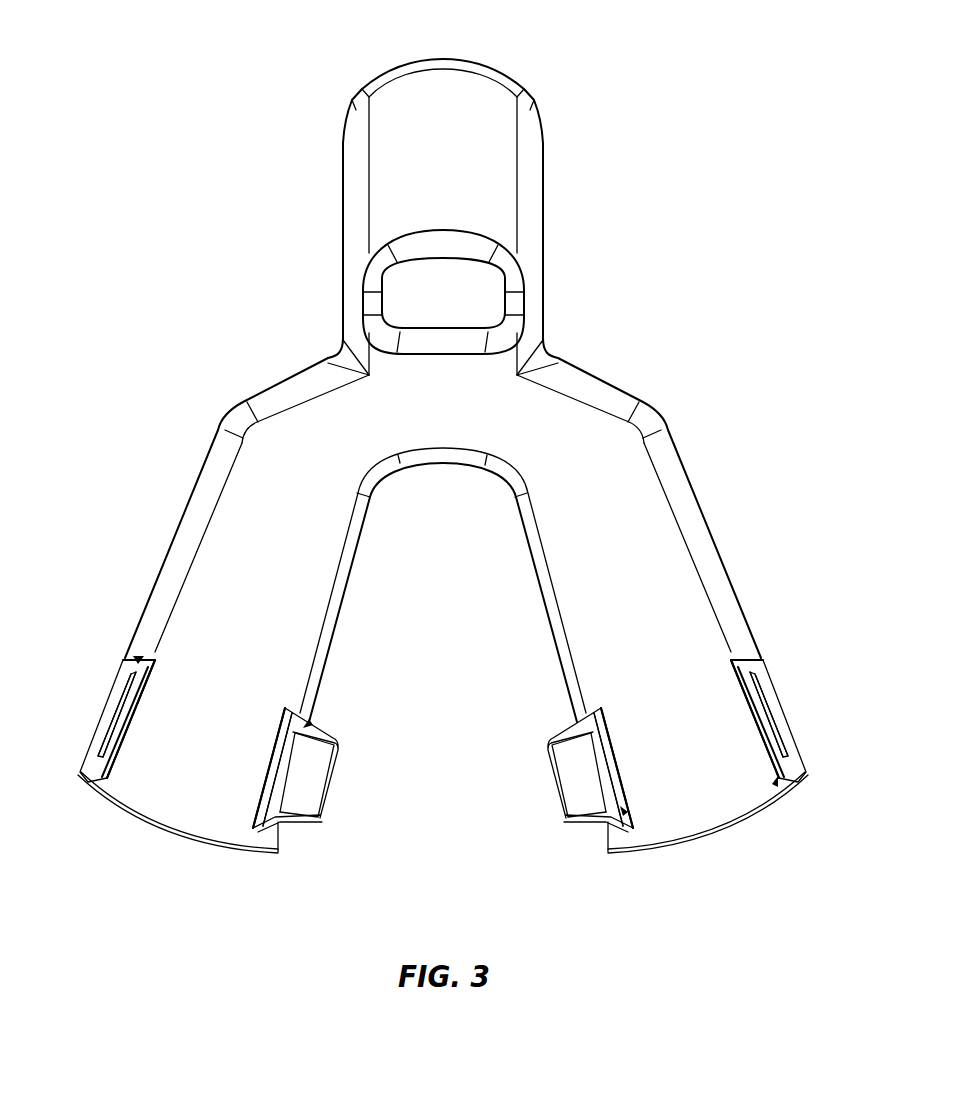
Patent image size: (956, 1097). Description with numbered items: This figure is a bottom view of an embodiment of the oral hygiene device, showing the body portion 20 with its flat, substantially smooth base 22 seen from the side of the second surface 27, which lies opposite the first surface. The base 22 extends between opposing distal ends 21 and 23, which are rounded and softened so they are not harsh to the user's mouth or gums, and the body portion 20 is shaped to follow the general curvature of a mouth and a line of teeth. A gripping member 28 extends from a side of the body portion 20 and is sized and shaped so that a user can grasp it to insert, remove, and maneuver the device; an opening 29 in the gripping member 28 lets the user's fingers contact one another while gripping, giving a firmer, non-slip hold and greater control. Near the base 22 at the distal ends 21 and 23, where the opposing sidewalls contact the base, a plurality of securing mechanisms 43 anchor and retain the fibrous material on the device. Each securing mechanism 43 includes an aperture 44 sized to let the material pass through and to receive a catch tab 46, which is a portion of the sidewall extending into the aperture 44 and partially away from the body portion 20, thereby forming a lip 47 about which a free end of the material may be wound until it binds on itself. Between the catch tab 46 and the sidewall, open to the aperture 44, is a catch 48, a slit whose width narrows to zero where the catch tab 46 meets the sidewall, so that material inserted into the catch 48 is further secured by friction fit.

The body portion 20 is at (435, 460).
The distal end 21 is at (722, 840).
The base 22 is at (673, 613).
The distal end 23 is at (165, 840).
The second surface 27 is at (276, 550).
The gripping member 28 is at (437, 82).
The opening 29 is at (455, 291).
The securing mechanism 43 is at (86, 722).
The aperture 44 is at (138, 660).
The catch tab 46 is at (117, 712).
The lip 47 is at (328, 777).
The catch 48 is at (130, 668).